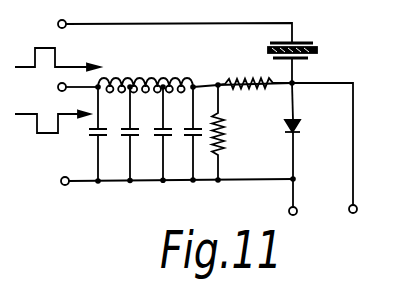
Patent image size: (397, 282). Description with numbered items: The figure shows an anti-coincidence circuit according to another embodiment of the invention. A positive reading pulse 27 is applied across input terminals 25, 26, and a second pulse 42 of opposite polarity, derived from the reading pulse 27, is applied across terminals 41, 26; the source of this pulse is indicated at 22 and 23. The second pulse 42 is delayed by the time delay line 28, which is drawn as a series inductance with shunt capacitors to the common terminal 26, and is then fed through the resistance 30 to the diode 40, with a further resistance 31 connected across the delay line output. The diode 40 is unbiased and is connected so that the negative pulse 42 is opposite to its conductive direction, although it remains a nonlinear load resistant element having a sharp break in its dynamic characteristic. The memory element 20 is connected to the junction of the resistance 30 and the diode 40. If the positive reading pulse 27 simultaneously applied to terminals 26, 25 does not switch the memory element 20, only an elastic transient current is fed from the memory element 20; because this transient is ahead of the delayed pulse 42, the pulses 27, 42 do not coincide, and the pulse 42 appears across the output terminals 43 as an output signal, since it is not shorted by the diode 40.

The memory element 20 is at (327, 33).
The pulse source 22 is at (6, 105).
The pulse source 23 is at (6, 200).
The input terminal 25 is at (47, 23).
The input terminal 26 is at (67, 191).
The reading pulse 27 is at (32, 46).
The time delay line 28 is at (145, 129).
The resistance 30 is at (262, 74).
The resistor 31 is at (226, 131).
The diode 40 is at (313, 119).
The terminal 41 is at (50, 90).
The second pulse 42 is at (40, 141).
The output terminals 43 is at (347, 215).